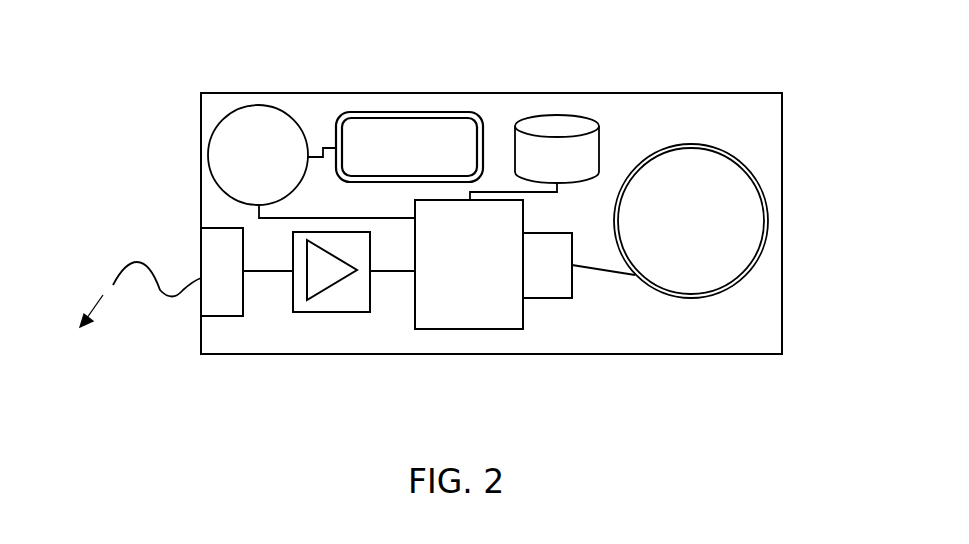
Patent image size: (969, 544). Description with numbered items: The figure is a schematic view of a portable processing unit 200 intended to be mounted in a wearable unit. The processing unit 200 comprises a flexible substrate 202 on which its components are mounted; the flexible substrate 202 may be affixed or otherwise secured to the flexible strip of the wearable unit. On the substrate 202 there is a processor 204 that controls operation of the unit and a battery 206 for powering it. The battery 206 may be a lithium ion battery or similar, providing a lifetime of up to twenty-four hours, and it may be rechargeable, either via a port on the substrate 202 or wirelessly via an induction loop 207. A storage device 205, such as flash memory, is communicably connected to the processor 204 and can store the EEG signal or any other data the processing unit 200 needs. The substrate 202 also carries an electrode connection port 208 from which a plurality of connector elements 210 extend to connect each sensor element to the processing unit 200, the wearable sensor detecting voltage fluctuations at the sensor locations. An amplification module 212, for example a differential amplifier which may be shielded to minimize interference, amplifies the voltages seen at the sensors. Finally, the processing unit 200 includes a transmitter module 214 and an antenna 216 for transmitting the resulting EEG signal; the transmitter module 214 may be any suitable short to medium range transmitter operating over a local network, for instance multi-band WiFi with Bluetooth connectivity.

The portable processing unit 200 is at (791, 366).
The flexible substrate 202 is at (277, 328).
The processor 204 is at (448, 313).
The storage device 205 is at (575, 123).
The battery 206 is at (265, 133).
The induction loop 207 is at (471, 113).
The electrode connection port 208 is at (213, 252).
The connector elements 210 is at (123, 268).
The amplification module 212 is at (348, 310).
The transmitter module 214 is at (550, 282).
The antenna 216 is at (770, 218).